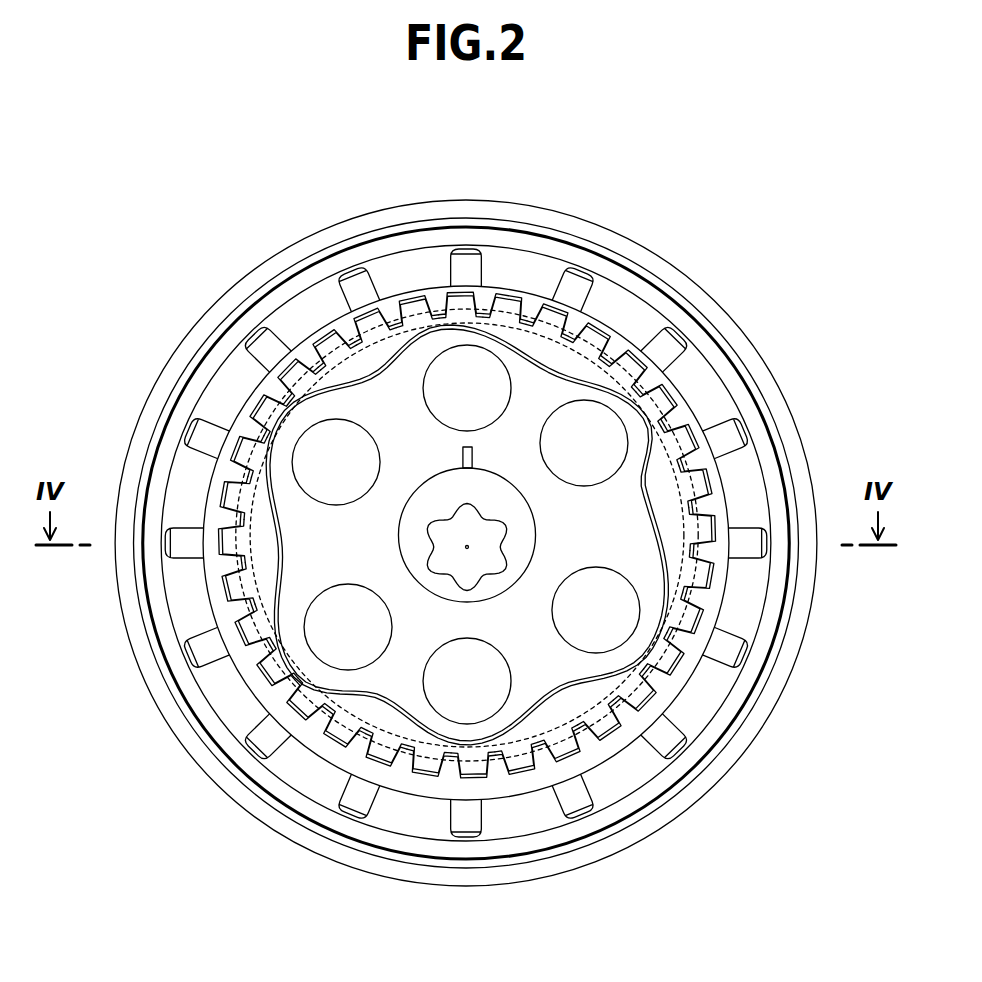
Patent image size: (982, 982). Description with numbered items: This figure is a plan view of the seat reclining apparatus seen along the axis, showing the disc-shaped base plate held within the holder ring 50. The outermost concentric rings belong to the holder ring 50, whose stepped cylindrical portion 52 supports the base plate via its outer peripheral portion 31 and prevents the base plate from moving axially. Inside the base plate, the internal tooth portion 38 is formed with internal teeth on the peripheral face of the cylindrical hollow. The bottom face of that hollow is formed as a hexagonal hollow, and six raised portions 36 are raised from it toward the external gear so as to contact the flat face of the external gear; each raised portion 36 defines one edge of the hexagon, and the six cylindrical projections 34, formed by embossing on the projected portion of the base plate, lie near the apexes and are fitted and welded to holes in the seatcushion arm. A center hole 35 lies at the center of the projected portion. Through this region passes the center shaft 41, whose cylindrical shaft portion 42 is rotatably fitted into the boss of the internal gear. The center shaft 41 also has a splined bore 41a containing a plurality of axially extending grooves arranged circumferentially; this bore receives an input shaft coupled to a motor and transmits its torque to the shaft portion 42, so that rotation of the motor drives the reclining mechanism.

The outer peripheral portion 31 is at (690, 663).
The cylindrical projections 34 is at (596, 610).
The center hole 35 is at (375, 705).
The raised portions 36 is at (347, 375).
The internal tooth portion 38 is at (668, 648).
The center shaft 41 is at (443, 552).
The splined bore 41a is at (467, 548).
The shaft portion 42 is at (410, 501).
The holder ring 50 is at (712, 292).
The portion for supporting the base plate 52 is at (527, 820).